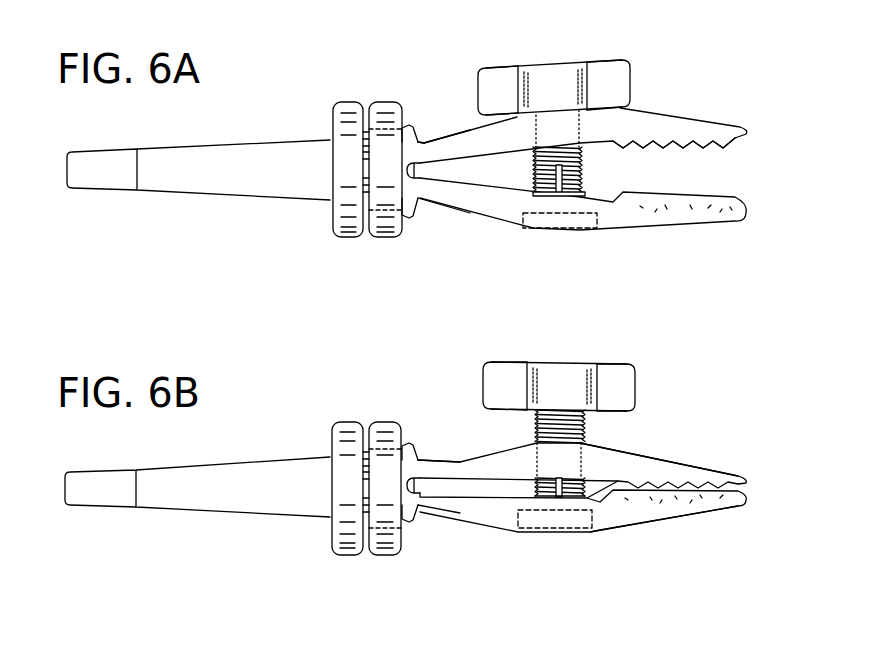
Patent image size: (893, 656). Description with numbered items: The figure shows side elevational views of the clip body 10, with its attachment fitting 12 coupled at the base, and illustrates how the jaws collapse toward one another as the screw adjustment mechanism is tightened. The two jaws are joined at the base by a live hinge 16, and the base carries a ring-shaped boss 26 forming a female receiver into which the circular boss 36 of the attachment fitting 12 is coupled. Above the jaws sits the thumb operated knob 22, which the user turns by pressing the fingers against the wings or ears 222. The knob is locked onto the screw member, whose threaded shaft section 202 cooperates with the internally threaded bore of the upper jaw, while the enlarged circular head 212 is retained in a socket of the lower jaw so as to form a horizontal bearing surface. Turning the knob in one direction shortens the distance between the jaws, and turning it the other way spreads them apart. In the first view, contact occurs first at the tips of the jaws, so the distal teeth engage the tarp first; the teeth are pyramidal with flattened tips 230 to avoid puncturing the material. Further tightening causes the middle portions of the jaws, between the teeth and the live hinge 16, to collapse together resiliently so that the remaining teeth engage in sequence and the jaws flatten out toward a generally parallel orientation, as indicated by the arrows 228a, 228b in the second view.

In FIG. 6A, the clip body 10 is at (716, 90).
In FIG. 6B, the clip body 10 is at (698, 398).
In FIG. 6A, the attachment fitting 12 is at (220, 138).
In FIG. 6B, the attachment fitting 12 is at (222, 456).
In FIG. 6A, the live hinge 16 is at (430, 187).
In FIG. 6B, the live hinge 16 is at (432, 508).
In FIG. 6A, the thumb operated knob 22 is at (603, 57).
In FIG. 6B, the thumb operated knob 22 is at (559, 386).
In FIG. 6A, the ring-shaped boss 26 is at (382, 238).
In FIG. 6B, the ring-shaped boss 26 is at (383, 557).
In FIG. 6A, the circular boss 36 is at (343, 238).
In FIG. 6B, the circular boss 36 is at (342, 557).
In FIG. 6A, the threaded shaft section 202 is at (532, 175).
In FIG. 6B, the threaded shaft section 202 is at (535, 431).
In FIG. 6A, the circular head 212 is at (531, 234).
In FIG. 6A, the wings or ears 222 is at (482, 85).
In FIG. 6B, the wings or ears 222 is at (484, 375).
In FIG. 6B, the arrow 228a is at (692, 459).
In FIG. 6B, the arrow 228b is at (612, 538).
In FIG. 6A, the flattened tips 230 is at (650, 152).